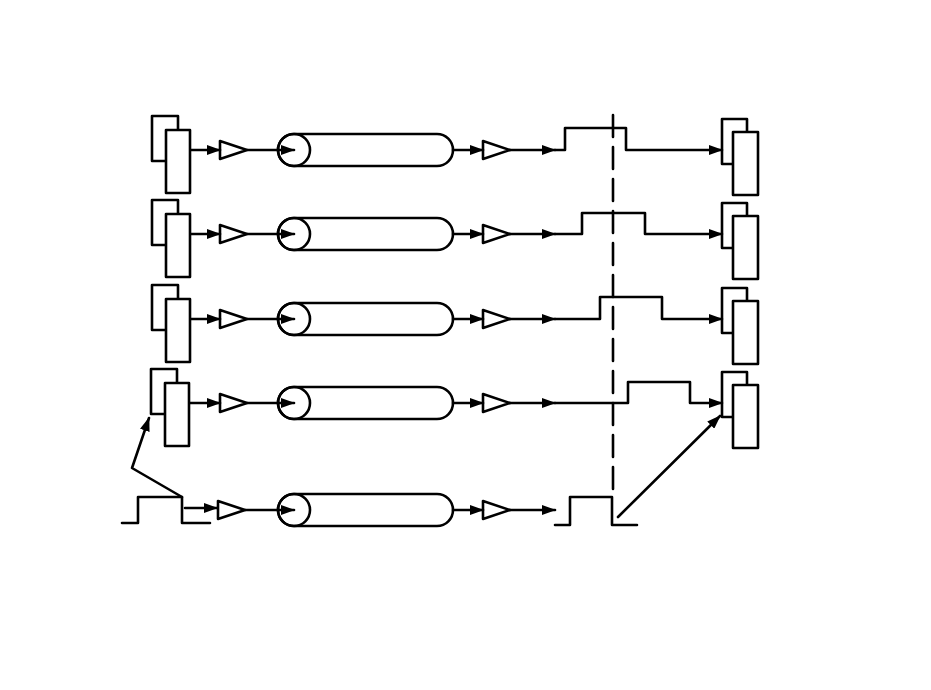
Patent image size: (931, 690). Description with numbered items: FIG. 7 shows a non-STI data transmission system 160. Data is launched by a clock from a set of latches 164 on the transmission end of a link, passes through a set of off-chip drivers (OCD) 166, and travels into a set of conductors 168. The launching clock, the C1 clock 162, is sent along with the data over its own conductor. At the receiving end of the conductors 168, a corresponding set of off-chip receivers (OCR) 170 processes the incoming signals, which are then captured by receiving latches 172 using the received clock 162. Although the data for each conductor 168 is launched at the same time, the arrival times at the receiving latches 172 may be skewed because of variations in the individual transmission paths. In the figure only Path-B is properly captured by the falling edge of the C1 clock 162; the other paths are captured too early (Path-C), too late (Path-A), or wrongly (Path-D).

The data transmission system 160 is at (331, 68).
The C1 clock 162 is at (124, 523).
The latches 164 is at (152, 229).
The off-chip drivers 166 is at (233, 143).
The conductors 168 is at (345, 135).
The off-chip receivers 170 is at (498, 146).
The receiving latches 172 is at (749, 123).